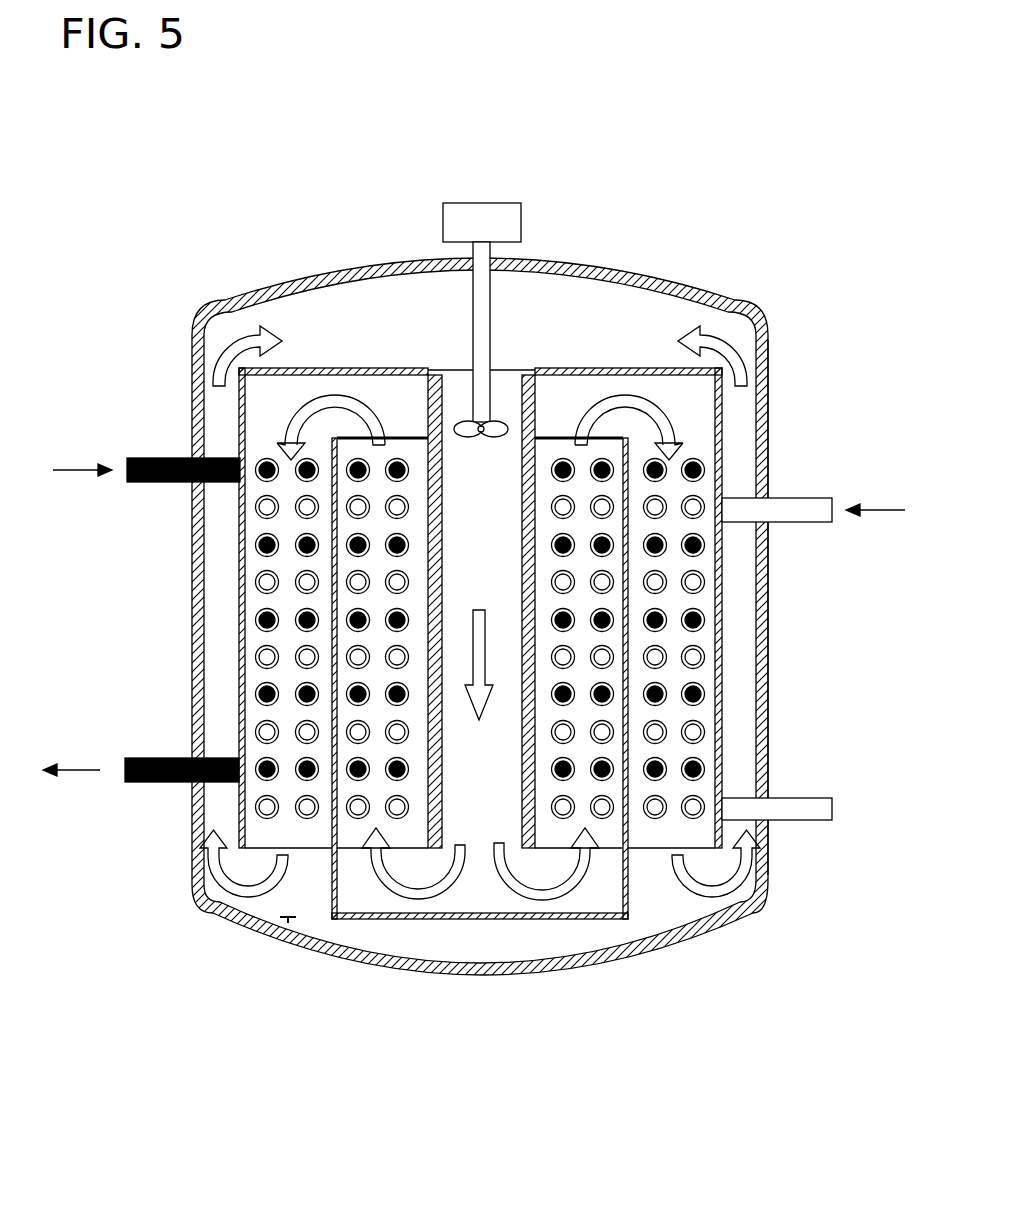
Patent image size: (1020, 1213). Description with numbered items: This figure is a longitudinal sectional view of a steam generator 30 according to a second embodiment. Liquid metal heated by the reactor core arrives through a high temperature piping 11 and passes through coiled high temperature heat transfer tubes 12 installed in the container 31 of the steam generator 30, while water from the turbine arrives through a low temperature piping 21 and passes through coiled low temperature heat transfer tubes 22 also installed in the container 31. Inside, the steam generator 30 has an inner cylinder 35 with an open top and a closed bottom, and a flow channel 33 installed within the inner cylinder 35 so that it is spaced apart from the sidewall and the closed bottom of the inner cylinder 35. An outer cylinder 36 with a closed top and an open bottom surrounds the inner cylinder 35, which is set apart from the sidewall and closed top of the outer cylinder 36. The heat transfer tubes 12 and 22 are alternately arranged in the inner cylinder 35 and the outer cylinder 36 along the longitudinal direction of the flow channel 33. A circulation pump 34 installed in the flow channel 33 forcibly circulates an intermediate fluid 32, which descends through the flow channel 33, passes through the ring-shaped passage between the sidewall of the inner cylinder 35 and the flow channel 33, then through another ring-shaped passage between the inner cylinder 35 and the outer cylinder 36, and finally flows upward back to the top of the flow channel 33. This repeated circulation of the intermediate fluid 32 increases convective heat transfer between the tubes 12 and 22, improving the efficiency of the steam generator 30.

The high temperature piping 11 is at (143, 757).
The high temperature heat transfer tubes 12 is at (257, 620).
The low temperature piping 21 is at (805, 797).
The low temperature heat transfer tubes 22 is at (698, 655).
The steam generator 30 is at (708, 270).
The container 31 is at (763, 598).
The intermediate fluid 32 is at (288, 923).
The flow channel 33 is at (482, 832).
The circulation pump 34 is at (478, 328).
The inner cylinder 35 is at (362, 919).
The outer cylinder 36 is at (240, 552).